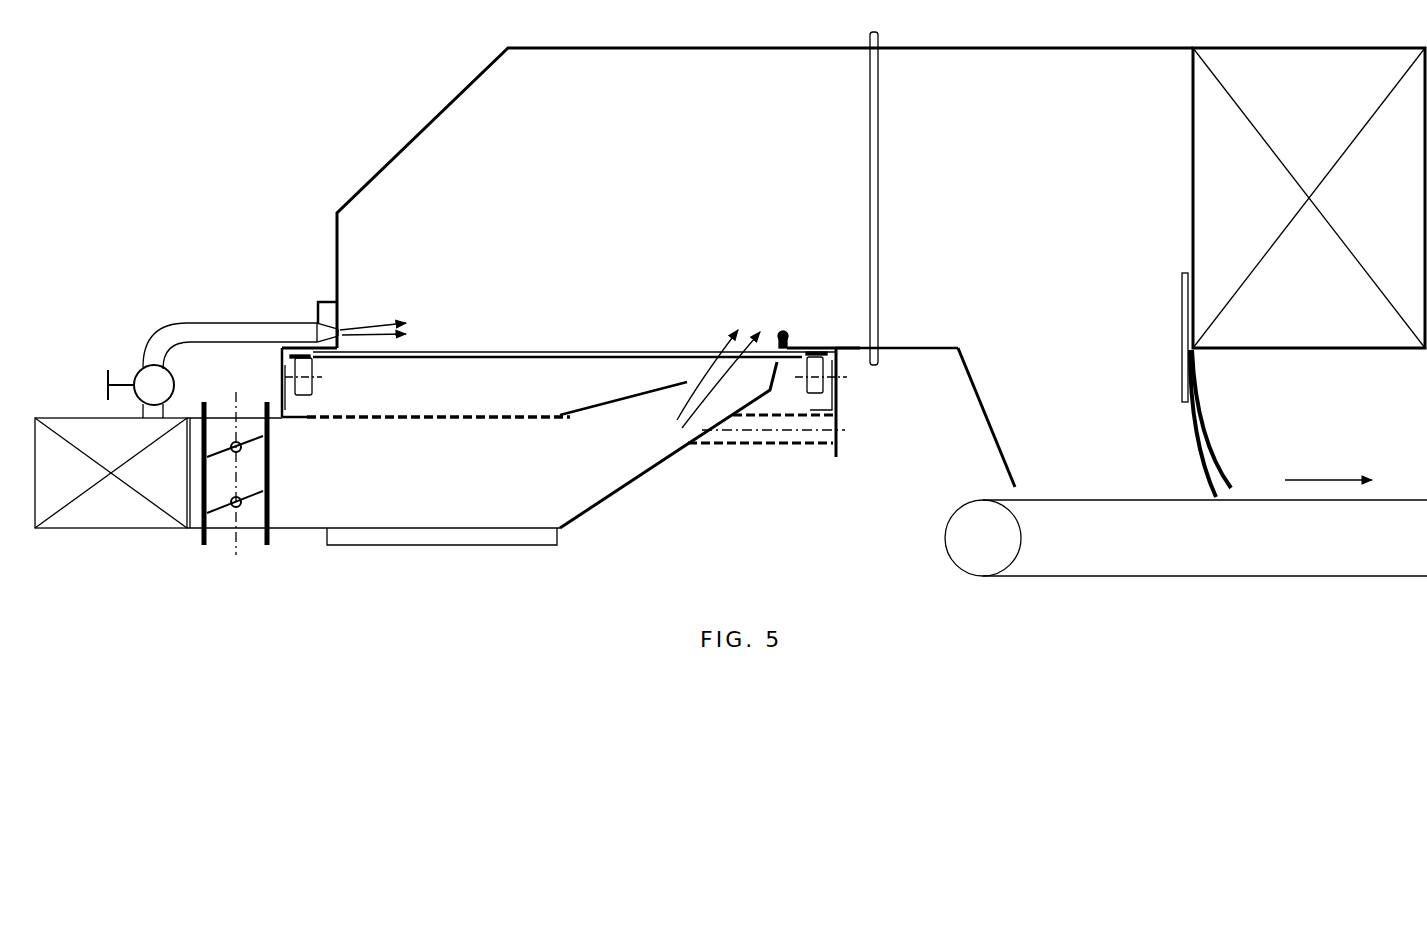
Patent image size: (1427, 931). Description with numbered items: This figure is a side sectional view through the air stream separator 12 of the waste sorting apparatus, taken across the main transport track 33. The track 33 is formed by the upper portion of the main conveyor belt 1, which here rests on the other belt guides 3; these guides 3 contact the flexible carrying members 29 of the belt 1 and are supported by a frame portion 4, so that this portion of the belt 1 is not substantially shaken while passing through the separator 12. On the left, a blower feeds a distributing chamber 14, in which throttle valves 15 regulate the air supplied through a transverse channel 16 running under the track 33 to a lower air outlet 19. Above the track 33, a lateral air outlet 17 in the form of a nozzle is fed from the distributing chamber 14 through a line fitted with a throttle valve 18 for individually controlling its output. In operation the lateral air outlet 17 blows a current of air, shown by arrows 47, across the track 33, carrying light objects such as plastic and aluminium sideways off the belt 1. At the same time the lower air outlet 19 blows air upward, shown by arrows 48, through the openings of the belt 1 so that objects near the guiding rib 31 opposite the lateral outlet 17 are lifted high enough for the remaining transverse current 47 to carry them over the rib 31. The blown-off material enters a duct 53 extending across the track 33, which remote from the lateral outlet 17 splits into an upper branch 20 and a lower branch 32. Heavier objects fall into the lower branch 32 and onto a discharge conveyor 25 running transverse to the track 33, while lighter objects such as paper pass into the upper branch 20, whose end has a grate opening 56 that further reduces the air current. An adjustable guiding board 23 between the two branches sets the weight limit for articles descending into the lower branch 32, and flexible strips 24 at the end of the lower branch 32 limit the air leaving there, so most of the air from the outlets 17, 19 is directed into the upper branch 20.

The main conveyor belt 1 is at (582, 350).
The other belt guides 3 is at (300, 357).
The frame portion 4 is at (750, 447).
The air stream separator 12 is at (396, 143).
The distributing chamber 14 is at (133, 530).
The throttle valves 15 is at (242, 505).
The transverse channel 16 is at (450, 480).
The lateral air outlets 17 is at (221, 321).
The throttle valves 18 is at (143, 368).
The lower air outlet 19 is at (702, 400).
The upper branch 20 is at (1325, 120).
The adjustable guiding board 23 is at (1183, 298).
The flexible strips 24 is at (1213, 447).
The discharge conveyor 25 is at (1143, 553).
The flexible carrying members 29 is at (815, 352).
The guiding rib 31 is at (781, 329).
The lower branch 32 is at (1070, 326).
The transport track 33 is at (515, 349).
The arrows 47 is at (388, 334).
The arrows 48 is at (728, 387).
The duct 53 is at (645, 195).
The grate opening 56 is at (1313, 479).